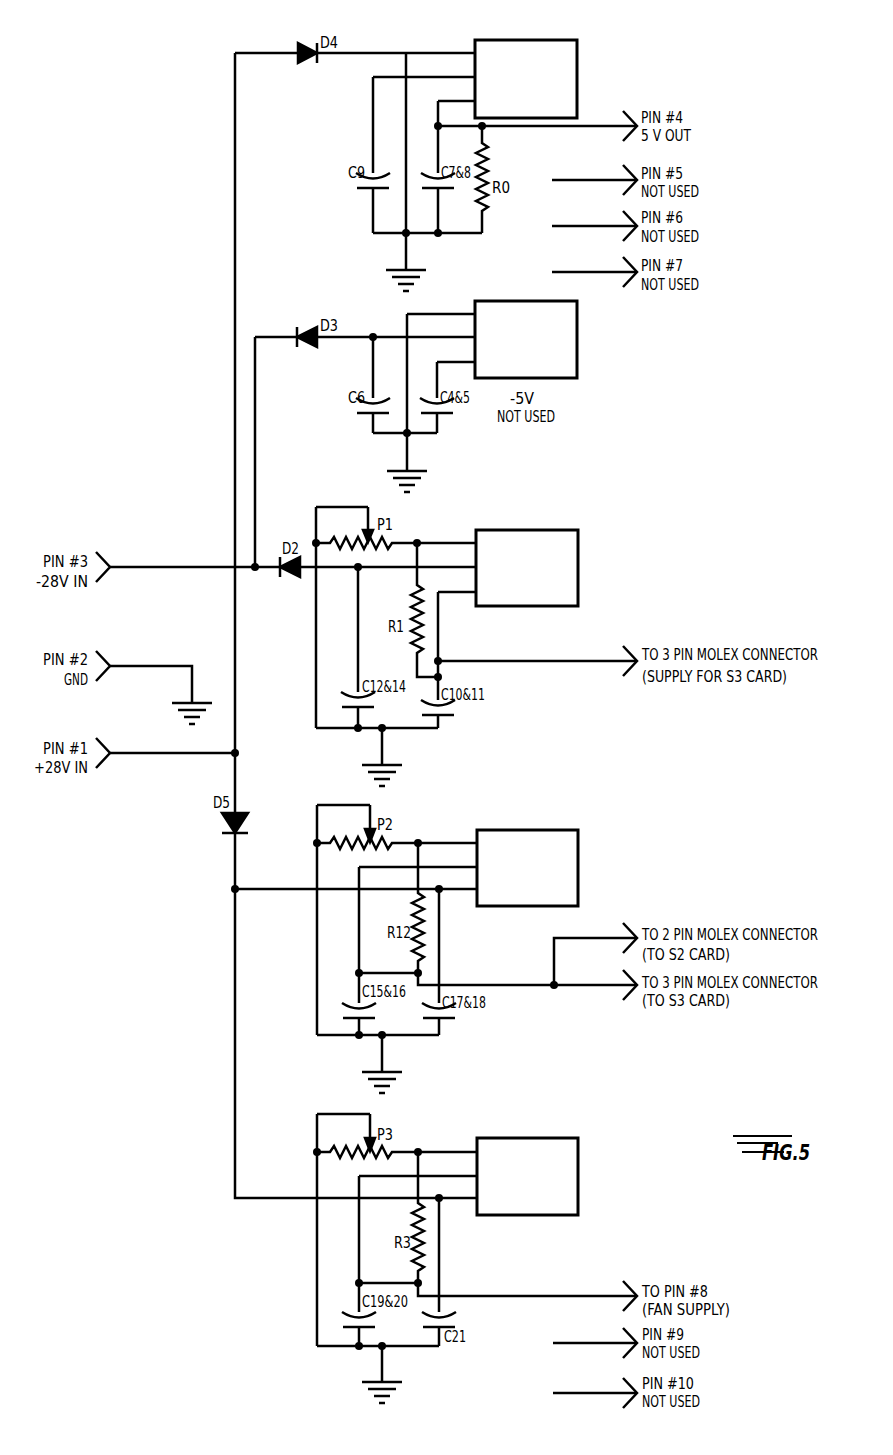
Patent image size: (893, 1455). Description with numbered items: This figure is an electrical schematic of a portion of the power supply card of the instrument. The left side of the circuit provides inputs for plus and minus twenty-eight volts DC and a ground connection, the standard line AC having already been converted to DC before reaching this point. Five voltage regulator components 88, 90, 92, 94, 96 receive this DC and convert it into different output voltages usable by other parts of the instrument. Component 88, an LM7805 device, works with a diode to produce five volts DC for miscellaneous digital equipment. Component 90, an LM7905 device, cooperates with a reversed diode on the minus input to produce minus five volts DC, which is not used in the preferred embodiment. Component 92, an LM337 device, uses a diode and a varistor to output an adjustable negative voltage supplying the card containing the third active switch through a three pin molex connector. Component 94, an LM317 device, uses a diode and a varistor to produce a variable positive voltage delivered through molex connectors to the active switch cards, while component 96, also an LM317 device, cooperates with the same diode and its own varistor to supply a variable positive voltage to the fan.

The voltage regulator component 88 is at (577, 57).
The voltage regulator component 90 is at (577, 342).
The voltage regulator component 92 is at (578, 553).
The voltage regulator component 94 is at (578, 855).
The voltage regulator component 96 is at (578, 1160).